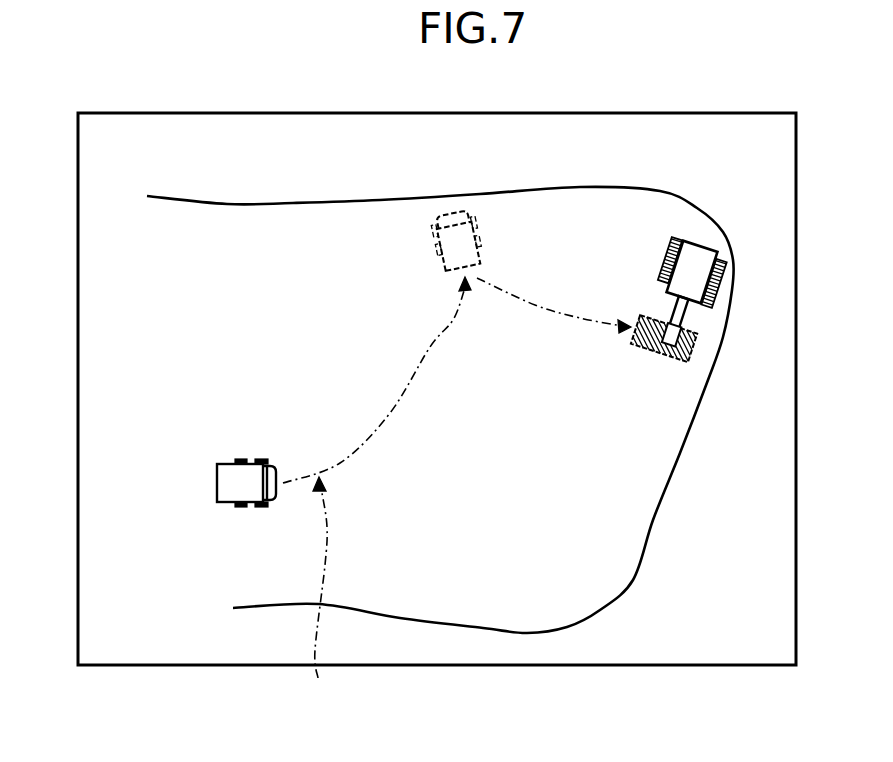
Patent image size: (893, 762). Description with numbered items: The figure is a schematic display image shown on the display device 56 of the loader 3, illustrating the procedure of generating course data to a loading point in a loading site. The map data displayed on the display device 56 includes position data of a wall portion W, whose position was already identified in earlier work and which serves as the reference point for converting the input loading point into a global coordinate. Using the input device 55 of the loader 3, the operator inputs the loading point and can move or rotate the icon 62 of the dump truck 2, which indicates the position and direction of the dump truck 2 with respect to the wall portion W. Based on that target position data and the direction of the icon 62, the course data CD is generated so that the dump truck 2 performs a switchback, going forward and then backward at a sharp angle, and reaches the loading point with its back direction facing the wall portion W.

The dump truck 2 is at (217, 483).
The loader 3 is at (720, 270).
The icon 62 is at (693, 337).
The input device 55 is at (437, 367).
The display device 56 is at (707, 113).
The wall portion W is at (433, 198).
The course data CD is at (320, 593).